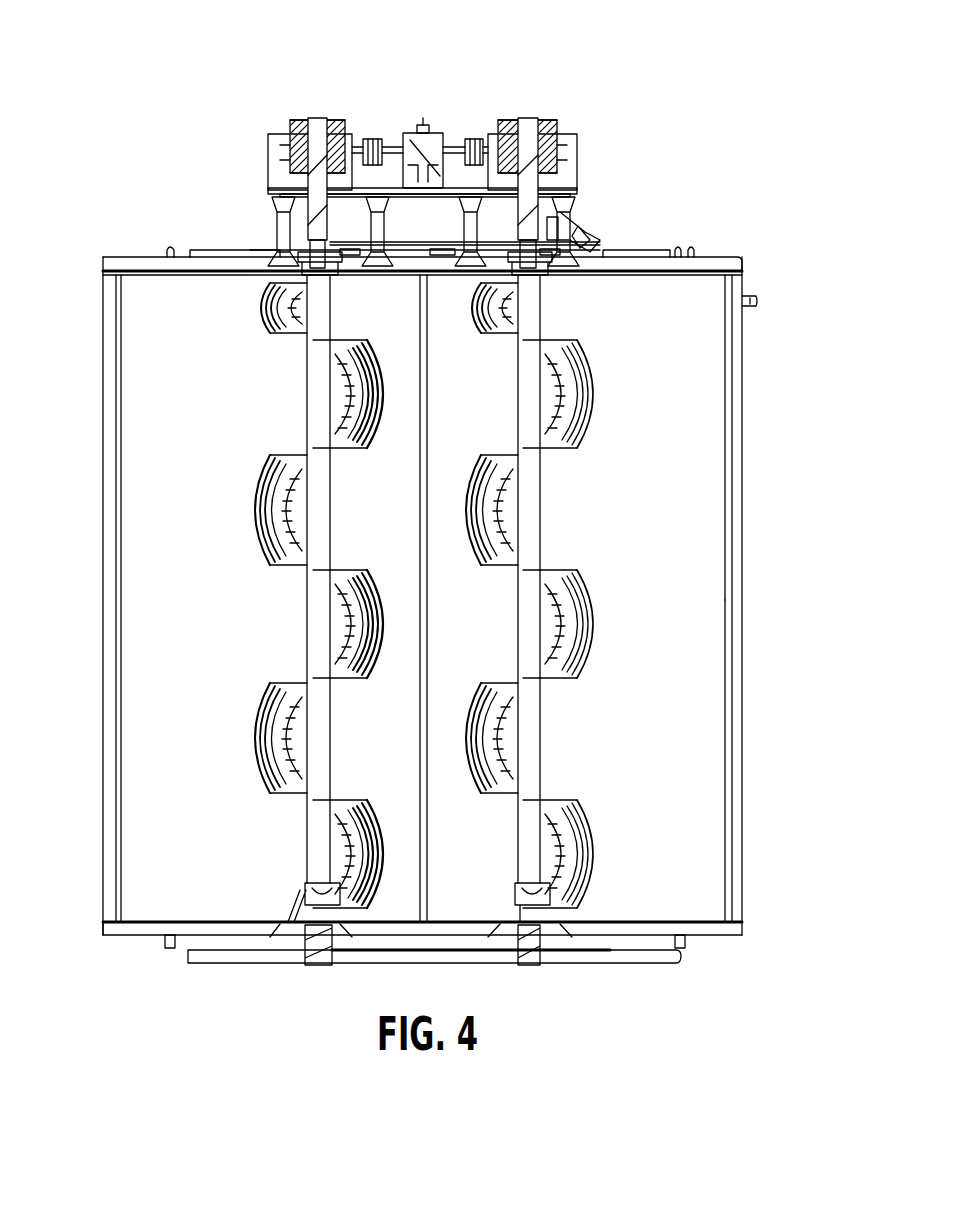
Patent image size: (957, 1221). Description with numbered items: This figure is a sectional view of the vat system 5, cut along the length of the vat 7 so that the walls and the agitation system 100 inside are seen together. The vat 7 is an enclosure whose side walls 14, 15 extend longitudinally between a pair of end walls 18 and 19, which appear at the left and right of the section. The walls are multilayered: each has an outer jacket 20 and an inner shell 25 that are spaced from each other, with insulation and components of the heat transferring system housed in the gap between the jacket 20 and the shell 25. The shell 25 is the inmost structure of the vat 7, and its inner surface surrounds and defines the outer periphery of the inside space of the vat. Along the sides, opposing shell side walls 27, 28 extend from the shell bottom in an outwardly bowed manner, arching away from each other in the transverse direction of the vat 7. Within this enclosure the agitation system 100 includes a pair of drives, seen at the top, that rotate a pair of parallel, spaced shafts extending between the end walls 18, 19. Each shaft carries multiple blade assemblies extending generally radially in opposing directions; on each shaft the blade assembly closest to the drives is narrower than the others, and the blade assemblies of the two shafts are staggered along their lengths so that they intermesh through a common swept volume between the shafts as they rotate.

The vat system 5 is at (471, 74).
The vat 7 is at (228, 252).
The side wall 14 is at (103, 598).
The side wall 15 is at (742, 598).
The end wall 18 is at (705, 940).
The end wall 19 is at (653, 262).
The outer jacket 20 is at (748, 405).
The inner shell 25 is at (726, 456).
The shell side wall 27 is at (122, 743).
The shell side wall 28 is at (726, 703).
The agitation system 100 is at (208, 470).